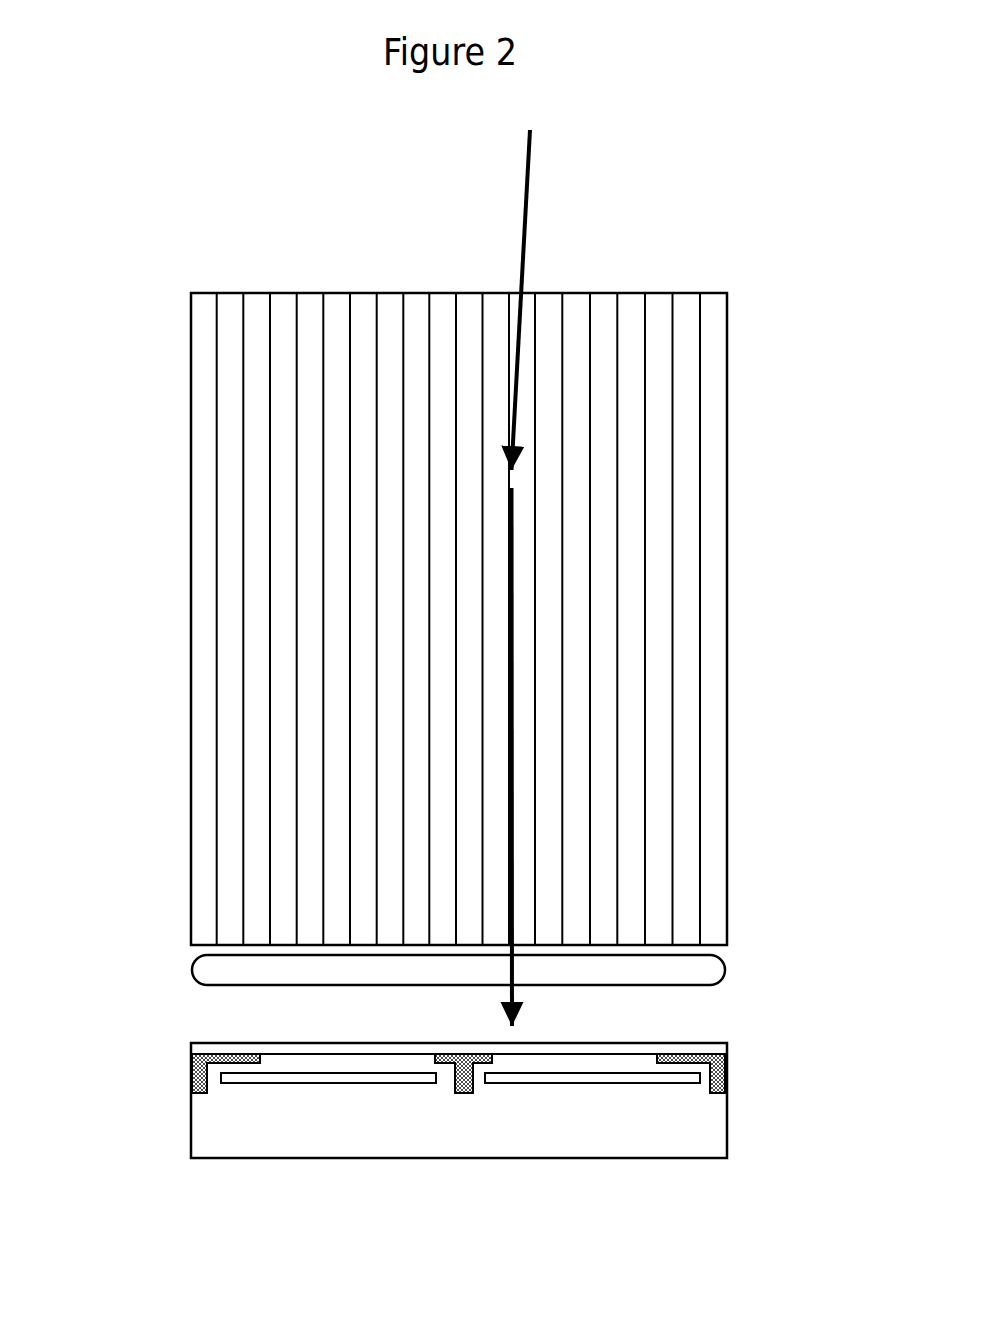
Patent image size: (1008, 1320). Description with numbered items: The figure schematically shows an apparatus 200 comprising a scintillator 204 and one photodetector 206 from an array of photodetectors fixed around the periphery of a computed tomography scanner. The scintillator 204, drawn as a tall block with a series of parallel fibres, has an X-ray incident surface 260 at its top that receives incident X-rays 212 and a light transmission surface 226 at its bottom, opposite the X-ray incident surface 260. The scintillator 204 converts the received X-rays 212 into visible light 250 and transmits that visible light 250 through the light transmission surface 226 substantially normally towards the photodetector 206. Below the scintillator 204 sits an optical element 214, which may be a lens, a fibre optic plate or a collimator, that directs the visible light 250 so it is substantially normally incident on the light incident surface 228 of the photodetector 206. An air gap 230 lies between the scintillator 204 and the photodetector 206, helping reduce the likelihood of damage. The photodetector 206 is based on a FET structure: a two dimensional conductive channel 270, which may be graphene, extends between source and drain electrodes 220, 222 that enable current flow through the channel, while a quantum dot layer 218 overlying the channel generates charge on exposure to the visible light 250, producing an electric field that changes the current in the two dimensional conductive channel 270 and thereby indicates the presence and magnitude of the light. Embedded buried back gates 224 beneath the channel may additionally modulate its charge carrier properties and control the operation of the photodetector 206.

The apparatus 200 is at (166, 165).
The scintillator 204 is at (483, 593).
The photodetector 206 is at (130, 1130).
The X-rays 212 is at (525, 217).
The optical element 214 is at (708, 967).
The quantum dot layer 218 is at (720, 1048).
The source electrode 220 is at (192, 1070).
The drain electrode 222 is at (467, 1083).
The buried back gate 224 is at (325, 1081).
The light transmission surface 226 is at (212, 952).
The light incident surface 228 is at (226, 1028).
The air gap 230 is at (745, 983).
The visible light 250 is at (520, 1010).
The X-ray incident surface 260 is at (268, 282).
The two dimensional conductive channel 270 is at (328, 1059).